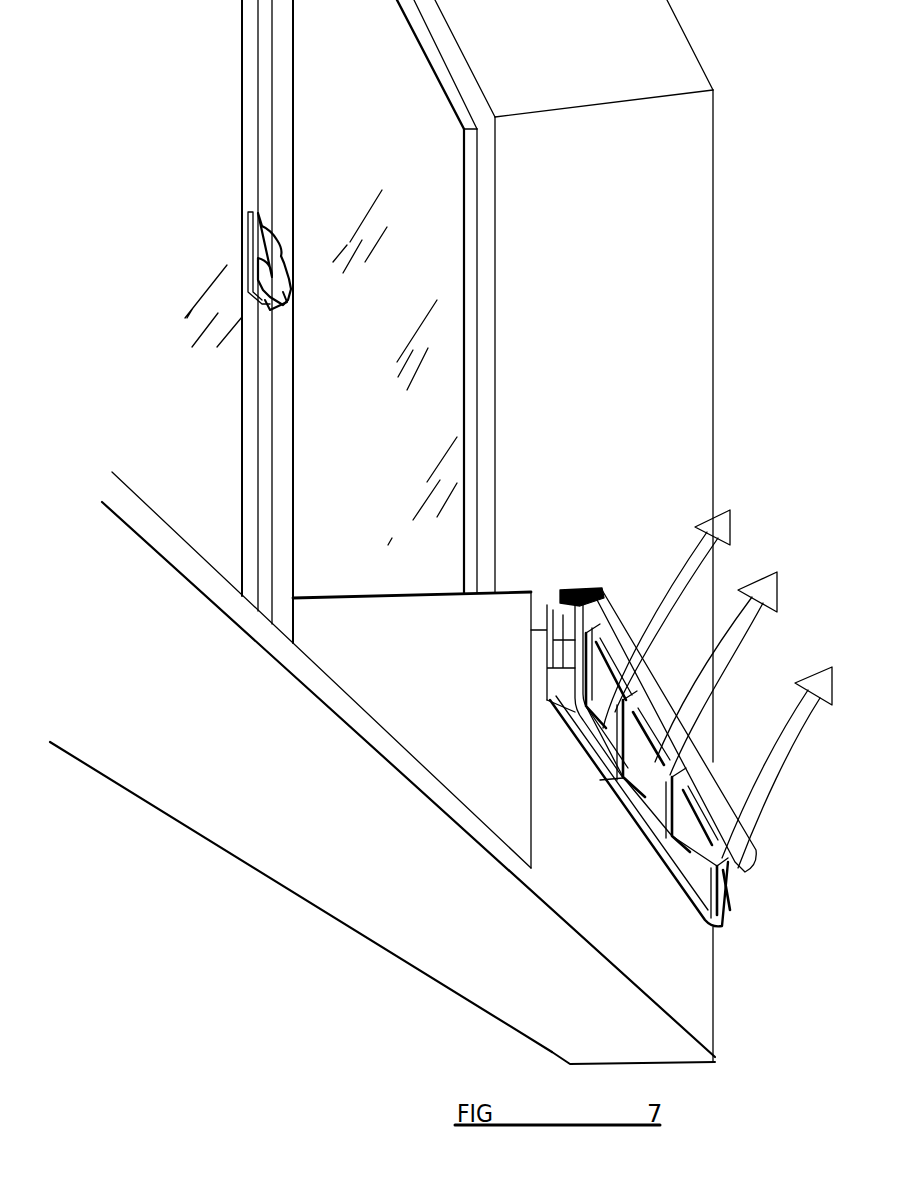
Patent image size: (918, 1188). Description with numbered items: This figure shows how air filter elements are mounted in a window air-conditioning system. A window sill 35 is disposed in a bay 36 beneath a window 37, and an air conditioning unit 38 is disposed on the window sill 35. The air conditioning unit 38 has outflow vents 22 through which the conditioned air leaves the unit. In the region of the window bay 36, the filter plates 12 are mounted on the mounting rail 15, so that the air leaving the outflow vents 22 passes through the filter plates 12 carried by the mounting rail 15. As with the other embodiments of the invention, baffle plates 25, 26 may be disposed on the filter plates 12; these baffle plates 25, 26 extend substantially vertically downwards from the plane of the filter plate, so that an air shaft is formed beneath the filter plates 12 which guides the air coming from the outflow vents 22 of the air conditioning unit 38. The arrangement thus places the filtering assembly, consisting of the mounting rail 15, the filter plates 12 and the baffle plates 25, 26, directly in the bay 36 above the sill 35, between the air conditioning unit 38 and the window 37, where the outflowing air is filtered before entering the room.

The filter plates 12 is at (573, 640).
The mounting rail 15 is at (627, 655).
The outflow vents 22 is at (531, 630).
The baffle plate 25 is at (595, 752).
The baffle plate 26 is at (647, 830).
The window sill 35 is at (277, 820).
The bay 36 is at (555, 531).
The window 37 is at (321, 321).
The air conditioning unit 38 is at (412, 730).